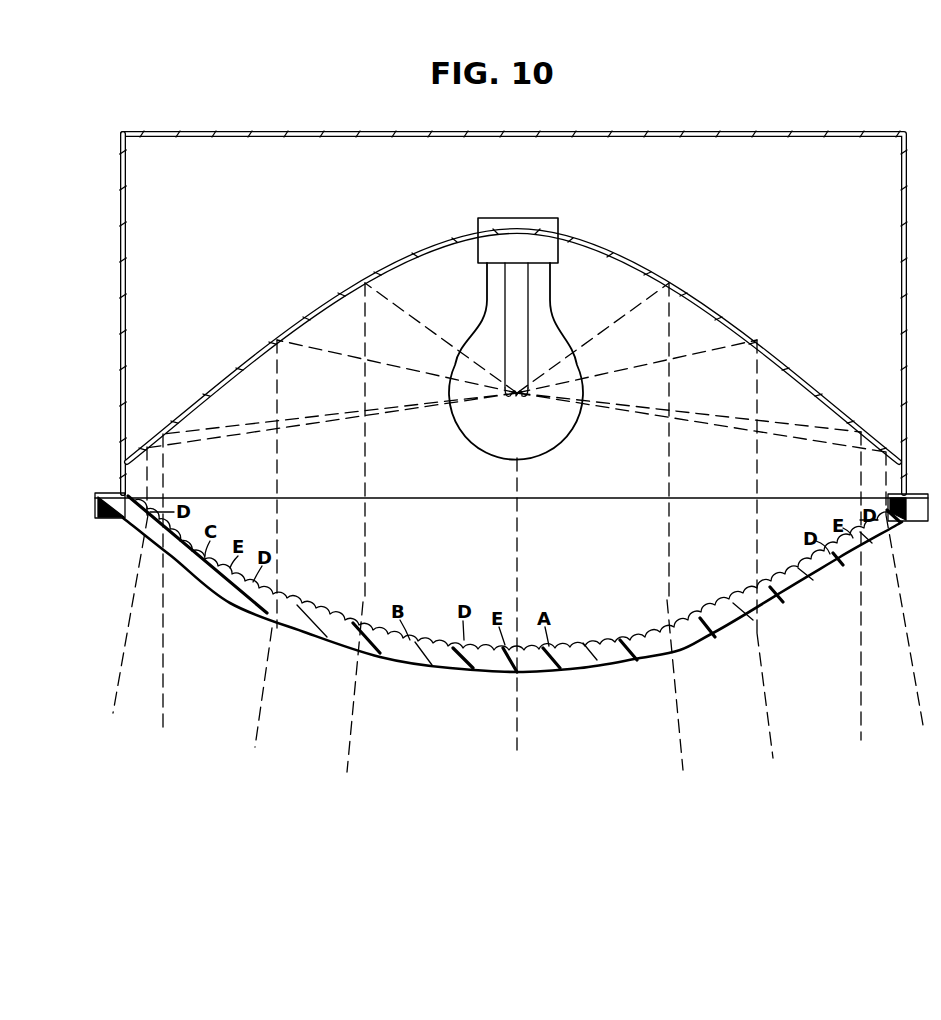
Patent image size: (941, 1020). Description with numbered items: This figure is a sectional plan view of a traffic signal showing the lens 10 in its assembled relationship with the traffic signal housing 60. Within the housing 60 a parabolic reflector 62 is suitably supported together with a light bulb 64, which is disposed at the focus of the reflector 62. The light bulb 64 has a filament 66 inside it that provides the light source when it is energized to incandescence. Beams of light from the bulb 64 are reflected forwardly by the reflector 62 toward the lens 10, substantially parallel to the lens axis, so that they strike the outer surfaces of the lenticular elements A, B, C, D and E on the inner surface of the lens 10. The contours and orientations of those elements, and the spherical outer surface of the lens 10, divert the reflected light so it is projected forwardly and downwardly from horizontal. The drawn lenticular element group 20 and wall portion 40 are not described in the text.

The housing 40 is at (217, 118).
The traffic signal housing 60 is at (122, 212).
The parabolic reflector 62 is at (334, 295).
The light bulb 64 is at (487, 322).
The filament 66 is at (530, 397).
The lens 10 is at (232, 606).
The lenticular elements 20 is at (727, 596).